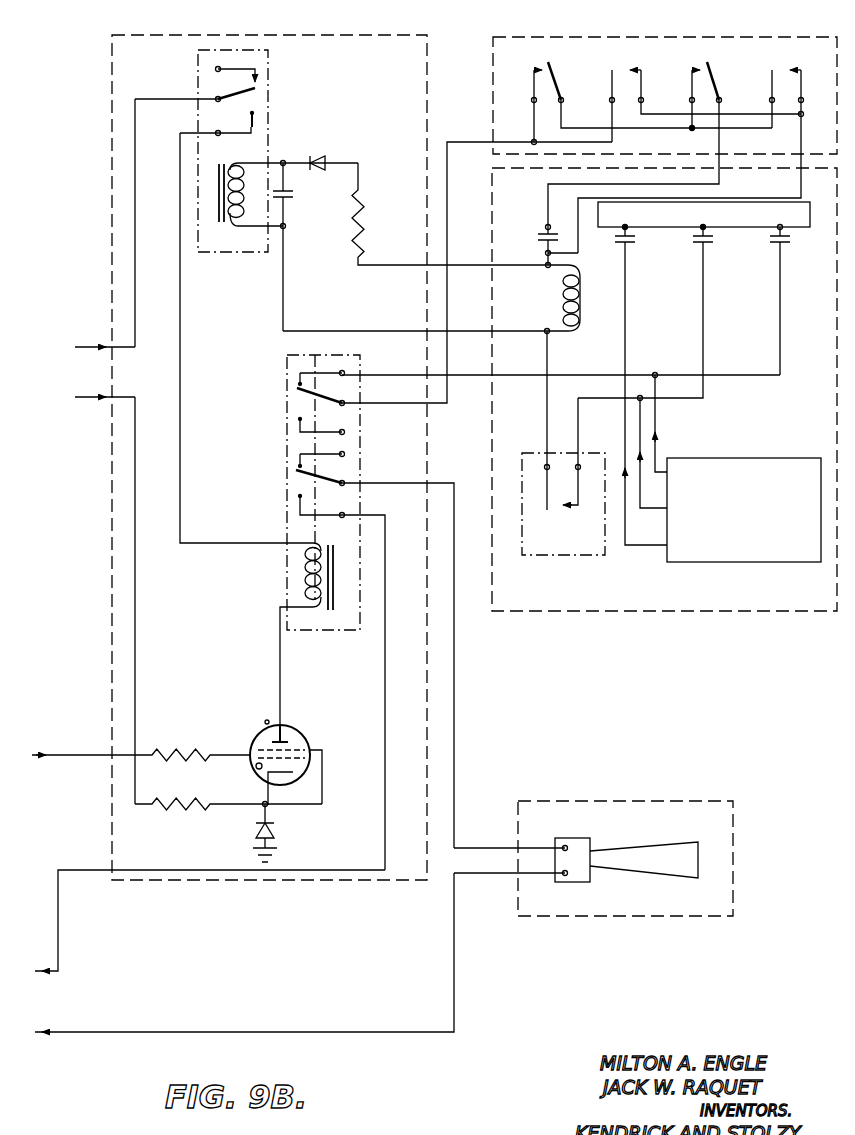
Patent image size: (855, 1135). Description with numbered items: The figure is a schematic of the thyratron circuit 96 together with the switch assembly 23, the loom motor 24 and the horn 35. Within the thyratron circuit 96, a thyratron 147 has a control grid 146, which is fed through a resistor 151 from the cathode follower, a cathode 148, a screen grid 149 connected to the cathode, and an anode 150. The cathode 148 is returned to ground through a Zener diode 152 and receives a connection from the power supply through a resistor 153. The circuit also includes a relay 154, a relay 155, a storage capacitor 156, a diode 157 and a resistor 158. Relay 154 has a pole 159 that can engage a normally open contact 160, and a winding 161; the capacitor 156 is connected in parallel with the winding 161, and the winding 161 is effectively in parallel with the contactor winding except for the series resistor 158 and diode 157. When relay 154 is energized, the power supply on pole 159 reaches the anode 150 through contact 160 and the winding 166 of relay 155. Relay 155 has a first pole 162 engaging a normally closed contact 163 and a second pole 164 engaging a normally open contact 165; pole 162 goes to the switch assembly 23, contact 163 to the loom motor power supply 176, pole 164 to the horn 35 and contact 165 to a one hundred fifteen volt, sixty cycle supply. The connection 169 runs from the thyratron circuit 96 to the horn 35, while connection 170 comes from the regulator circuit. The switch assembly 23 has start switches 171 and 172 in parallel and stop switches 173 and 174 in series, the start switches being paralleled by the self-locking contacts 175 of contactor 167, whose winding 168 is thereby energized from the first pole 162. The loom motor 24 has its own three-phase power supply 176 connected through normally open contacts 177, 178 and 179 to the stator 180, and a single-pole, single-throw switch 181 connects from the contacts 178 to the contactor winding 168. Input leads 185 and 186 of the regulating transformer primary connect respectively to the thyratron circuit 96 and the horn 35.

The switch assembly 23 is at (628, 36).
The loom motor 24 is at (664, 389).
The horn 35 is at (625, 858).
The thyratron circuit 96 is at (269, 457).
The control grid 146 is at (258, 751).
The thyratron 147 is at (266, 720).
The cathode 148 is at (280, 774).
The screen grid 149 is at (305, 749).
The anode 150 is at (285, 740).
The resistor 151 is at (214, 752).
The Zener diode 152 is at (277, 829).
The resistor 153 is at (188, 810).
The relay 154 is at (258, 256).
The relay 155 is at (282, 567).
The storage capacitor 156 is at (287, 199).
The diode 157 is at (321, 159).
The resistor 158 is at (364, 222).
The pole 159 is at (218, 97).
The normally open contact 160 is at (253, 118).
The winding 161 is at (240, 216).
The first pole 162 is at (328, 405).
The normally closed contact 163 is at (303, 383).
The second pole 164 is at (328, 480).
The normally open contact 165 is at (297, 500).
The winding 166 is at (321, 603).
The contactor 167 is at (585, 312).
The winding 168 is at (561, 294).
The connection 169 is at (491, 848).
The connection 170 is at (487, 874).
The start switch 171 is at (645, 86).
The start switch 172 is at (804, 93).
The stop switch 173 is at (530, 90).
The stop switch 174 is at (723, 87).
The self-locking contacts 175 is at (540, 236).
The power supply 176 is at (725, 458).
The contacts 177 is at (635, 240).
The contacts 178 is at (713, 241).
The contacts 179 is at (790, 242).
The stator 180 is at (704, 214).
The single-pole, single-throw switch 181 is at (568, 556).
The input lead 185 is at (58, 938).
The input lead 186 is at (143, 1032).